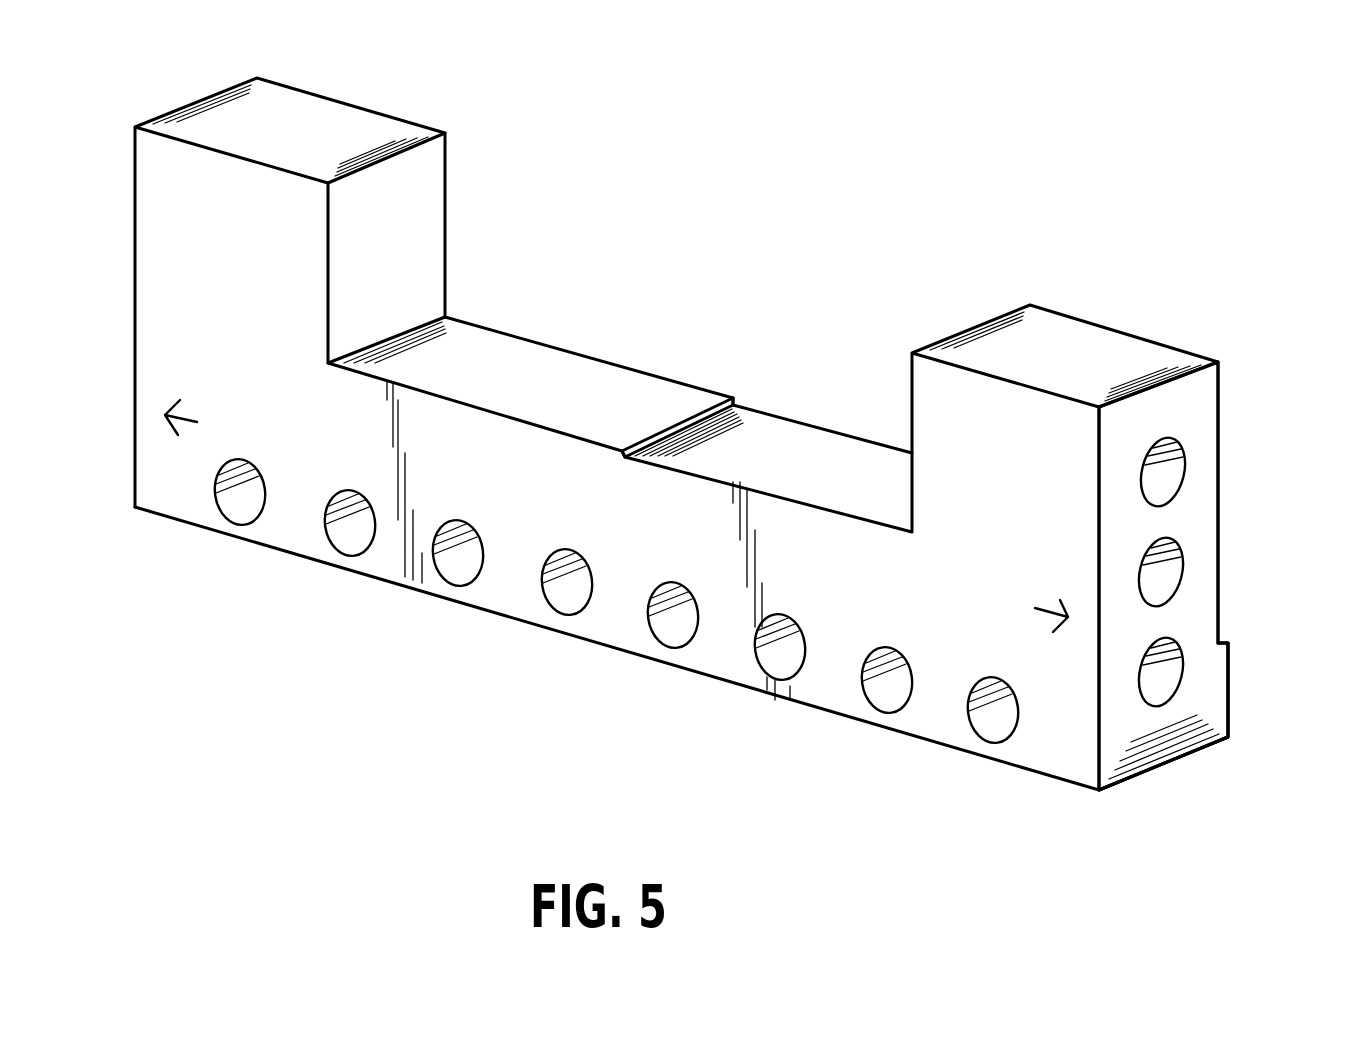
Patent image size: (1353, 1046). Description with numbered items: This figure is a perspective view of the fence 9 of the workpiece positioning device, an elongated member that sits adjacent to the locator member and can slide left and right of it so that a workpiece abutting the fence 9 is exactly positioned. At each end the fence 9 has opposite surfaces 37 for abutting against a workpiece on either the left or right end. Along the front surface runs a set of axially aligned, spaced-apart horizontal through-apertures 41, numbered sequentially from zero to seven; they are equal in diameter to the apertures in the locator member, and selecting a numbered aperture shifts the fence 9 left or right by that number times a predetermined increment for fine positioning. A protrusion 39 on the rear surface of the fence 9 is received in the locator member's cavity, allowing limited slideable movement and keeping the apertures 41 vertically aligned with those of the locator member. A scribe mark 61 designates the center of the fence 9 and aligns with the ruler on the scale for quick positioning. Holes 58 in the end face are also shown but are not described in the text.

The fence 9 is at (548, 158).
The opposite surfaces 37 is at (1197, 428).
The protrusion 39 is at (1230, 703).
The through-apertures 41 is at (560, 600).
The side holes 58 is at (1163, 663).
The scribe mark 61 is at (708, 413).